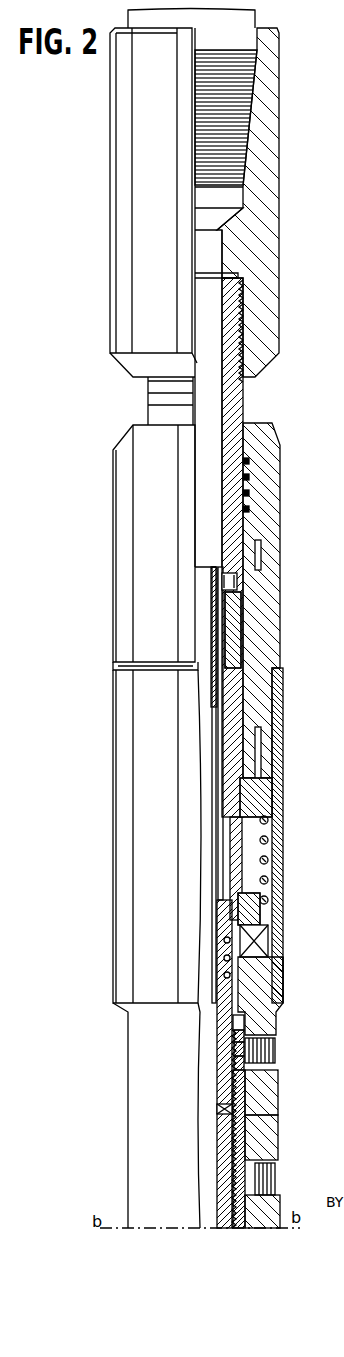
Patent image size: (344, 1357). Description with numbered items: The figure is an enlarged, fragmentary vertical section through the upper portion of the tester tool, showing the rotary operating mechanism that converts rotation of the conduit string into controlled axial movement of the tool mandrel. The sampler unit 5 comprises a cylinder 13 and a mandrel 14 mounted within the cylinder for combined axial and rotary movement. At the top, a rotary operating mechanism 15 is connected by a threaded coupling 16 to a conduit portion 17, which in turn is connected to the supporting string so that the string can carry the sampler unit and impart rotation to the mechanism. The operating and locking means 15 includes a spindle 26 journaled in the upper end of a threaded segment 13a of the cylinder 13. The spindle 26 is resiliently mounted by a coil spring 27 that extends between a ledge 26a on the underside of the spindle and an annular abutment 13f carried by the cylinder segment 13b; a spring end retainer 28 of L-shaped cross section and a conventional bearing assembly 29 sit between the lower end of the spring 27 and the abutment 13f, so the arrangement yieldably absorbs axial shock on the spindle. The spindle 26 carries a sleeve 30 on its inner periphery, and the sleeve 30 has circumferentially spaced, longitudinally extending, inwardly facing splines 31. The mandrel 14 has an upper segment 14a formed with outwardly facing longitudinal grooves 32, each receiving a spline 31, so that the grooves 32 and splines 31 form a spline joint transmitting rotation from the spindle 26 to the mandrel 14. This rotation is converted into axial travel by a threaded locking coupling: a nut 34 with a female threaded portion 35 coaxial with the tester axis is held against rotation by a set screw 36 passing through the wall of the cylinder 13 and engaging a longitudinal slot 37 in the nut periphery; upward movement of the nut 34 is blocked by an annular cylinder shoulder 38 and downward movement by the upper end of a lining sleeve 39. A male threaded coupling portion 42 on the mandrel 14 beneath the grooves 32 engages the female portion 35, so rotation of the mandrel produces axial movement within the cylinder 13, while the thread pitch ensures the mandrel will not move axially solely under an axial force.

The sampler unit 5 is at (299, 674).
The cylinder 13 is at (113, 802).
The threaded segment of cylinder 13a is at (265, 493).
The cylinder segment 13b is at (262, 1145).
The annular abutment 13f is at (256, 958).
The mandrel 14 is at (218, 1022).
The upper segment of mandrel 14a is at (218, 948).
The rotary operating mechanism 15 is at (296, 960).
The threaded coupling 16 is at (268, 196).
The conduit portion 17 is at (240, 25).
The spindle 26 is at (232, 406).
The ledge 26a is at (262, 805).
The coil spring 27 is at (266, 861).
The spring end retainer 28 is at (260, 916).
The bearing assembly 29 is at (256, 943).
The sleeve 30 is at (235, 633).
The splines 31 is at (230, 587).
The grooves 32 is at (214, 608).
The nut 34 is at (236, 1068).
The female threaded portion 35 is at (233, 1031).
The set screw 36 is at (276, 1048).
The slot 37 is at (240, 1040).
The annular cylinder shoulder 38 is at (241, 1024).
The lining sleeve 39 is at (255, 1106).
The male threaded coupling portion 42 is at (218, 1110).